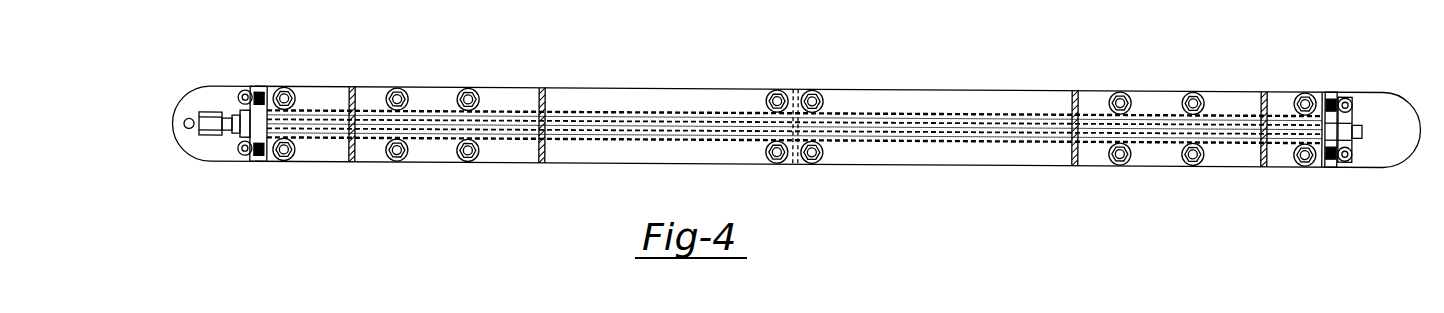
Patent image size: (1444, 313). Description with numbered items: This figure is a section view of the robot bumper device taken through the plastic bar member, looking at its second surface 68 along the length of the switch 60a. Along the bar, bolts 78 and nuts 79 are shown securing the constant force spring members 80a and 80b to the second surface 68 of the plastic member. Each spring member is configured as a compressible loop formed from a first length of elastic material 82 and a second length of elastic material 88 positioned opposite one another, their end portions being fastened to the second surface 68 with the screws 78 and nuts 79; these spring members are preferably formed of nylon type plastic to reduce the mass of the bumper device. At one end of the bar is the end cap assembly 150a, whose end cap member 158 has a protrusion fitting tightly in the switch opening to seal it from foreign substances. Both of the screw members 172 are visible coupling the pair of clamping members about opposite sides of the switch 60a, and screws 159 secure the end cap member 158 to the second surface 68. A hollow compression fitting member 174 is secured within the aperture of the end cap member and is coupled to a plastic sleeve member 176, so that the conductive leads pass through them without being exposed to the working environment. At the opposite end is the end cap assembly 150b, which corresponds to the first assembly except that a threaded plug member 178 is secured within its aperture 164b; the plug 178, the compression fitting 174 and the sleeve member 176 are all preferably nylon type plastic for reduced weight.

The second surface 68 is at (695, 94).
The switch 60a is at (598, 116).
The screws 78 is at (450, 88).
The nuts 79 is at (516, 65).
The constant force spring member 80a is at (1052, 136).
The constant force spring member 80b is at (354, 176).
The first length of elastic material 82 is at (1088, 97).
The second length of elastic material 88 is at (1268, 91).
The end cap assembly 150a is at (252, 181).
The end cap assembly 150b is at (1322, 173).
The end cap member 158 is at (238, 112).
The screws 159 is at (248, 92).
The aperture 164b is at (1361, 106).
The screw members 172 is at (294, 90).
The hollow compression fitting member 174 is at (205, 112).
The plastic sleeve member 176 is at (192, 143).
The threaded plug member 178 is at (1357, 136).